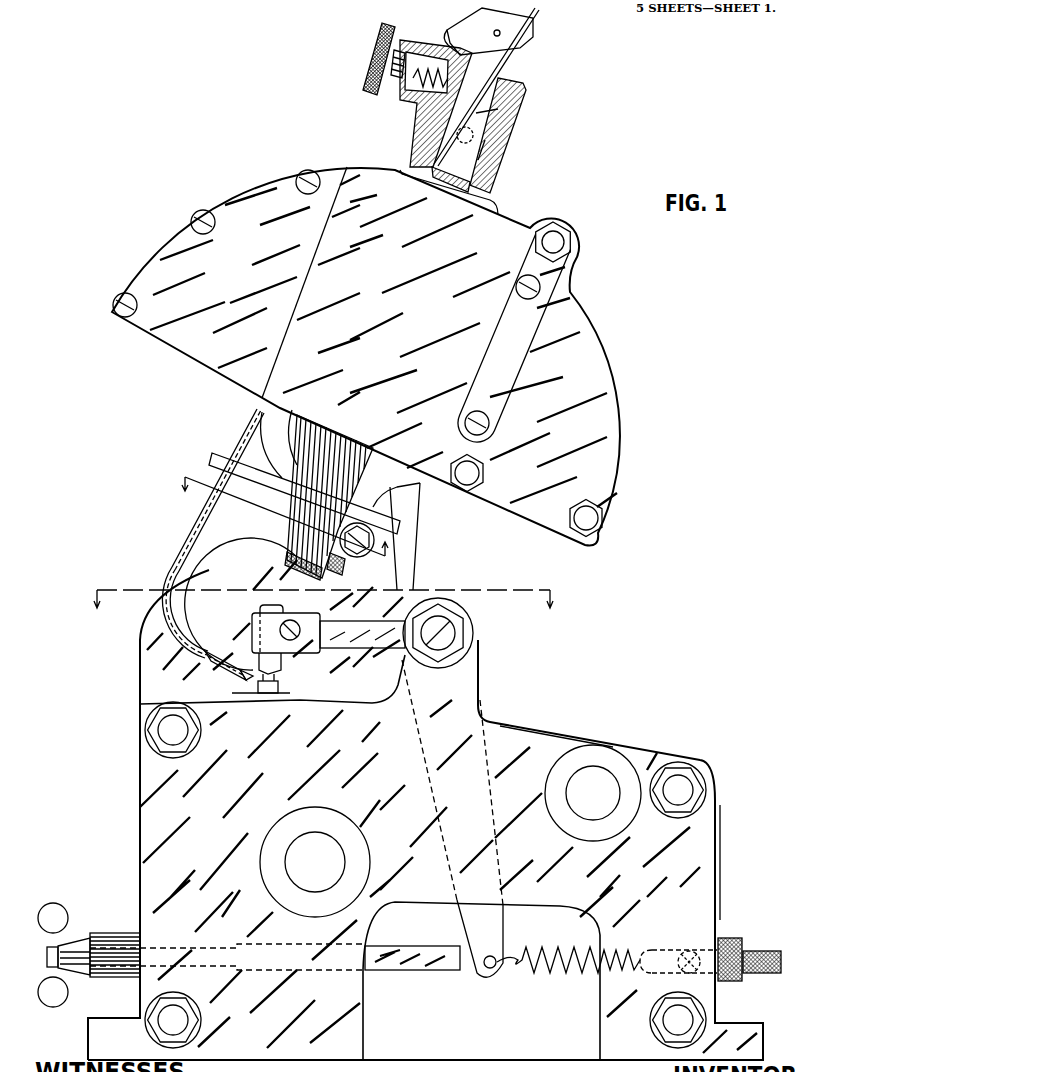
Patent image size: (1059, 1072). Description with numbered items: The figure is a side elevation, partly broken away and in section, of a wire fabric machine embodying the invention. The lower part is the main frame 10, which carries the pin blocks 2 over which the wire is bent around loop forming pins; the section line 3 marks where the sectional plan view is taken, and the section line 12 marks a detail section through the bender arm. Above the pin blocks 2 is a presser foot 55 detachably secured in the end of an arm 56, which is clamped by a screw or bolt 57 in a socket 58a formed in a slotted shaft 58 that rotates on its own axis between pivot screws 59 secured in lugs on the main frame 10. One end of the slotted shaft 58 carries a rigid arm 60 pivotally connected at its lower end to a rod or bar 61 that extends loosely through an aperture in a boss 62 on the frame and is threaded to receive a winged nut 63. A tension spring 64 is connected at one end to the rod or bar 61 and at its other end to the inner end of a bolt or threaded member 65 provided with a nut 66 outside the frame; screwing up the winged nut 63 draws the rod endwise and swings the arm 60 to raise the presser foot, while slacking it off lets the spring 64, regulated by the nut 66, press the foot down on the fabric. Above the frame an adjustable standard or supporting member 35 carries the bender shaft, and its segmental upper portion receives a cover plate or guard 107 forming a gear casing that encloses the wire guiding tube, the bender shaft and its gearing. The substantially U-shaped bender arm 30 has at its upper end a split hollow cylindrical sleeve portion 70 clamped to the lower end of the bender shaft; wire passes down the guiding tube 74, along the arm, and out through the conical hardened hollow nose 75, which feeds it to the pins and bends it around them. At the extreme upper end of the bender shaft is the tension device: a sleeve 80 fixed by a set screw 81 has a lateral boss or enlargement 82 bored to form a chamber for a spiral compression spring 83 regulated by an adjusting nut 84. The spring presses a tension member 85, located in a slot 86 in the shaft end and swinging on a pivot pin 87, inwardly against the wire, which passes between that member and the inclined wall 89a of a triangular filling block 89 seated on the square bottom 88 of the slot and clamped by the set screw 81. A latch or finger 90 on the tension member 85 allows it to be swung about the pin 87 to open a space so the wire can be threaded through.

The pin blocks 2 is at (297, 696).
The section line 3— 3 is at (324, 611).
The main frame 10 is at (425, 799).
The section line 12— 12 is at (281, 515).
The bender arm 30 is at (176, 554).
The standard or supporting member 35 is at (412, 545).
The presser foot 55 is at (284, 677).
The arm 56 is at (253, 636).
The screw or bolt 57 is at (297, 624).
The slotted shaft 58 is at (350, 625).
The socket 58a is at (278, 616).
The pivot screws 59 is at (457, 631).
The rigid arm 60 is at (435, 797).
The rod or bar 61 is at (400, 968).
The boss 62 is at (122, 933).
The winged nut 63 is at (55, 912).
The tension spring 64 is at (560, 973).
The bolt or threaded member 65 is at (766, 950).
The nut 66 is at (742, 978).
The hollow cylindrical sleeve portion 70 is at (290, 556).
The guiding tube 74 is at (248, 428).
The hollow nose 75 is at (206, 660).
The sleeve 80 is at (512, 100).
The set screw 81 is at (480, 155).
The lateral boss or enlargement 82 is at (417, 40).
The spiral compression spring 83 is at (406, 97).
The adjusting nut 84 is at (371, 62).
The tension member 85 is at (485, 30).
The slot 86 is at (522, 26).
The pivot pin 87 is at (501, 34).
The square bottom 88 is at (472, 183).
The triangular filling block 89 is at (474, 135).
The inclined wall 89a is at (499, 110).
The latch or finger 90 is at (447, 34).
The cover plate or guard 107 is at (366, 356).